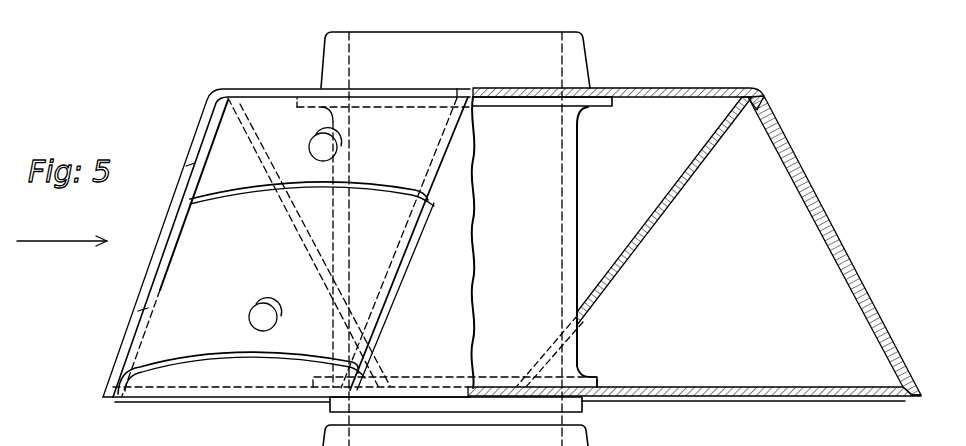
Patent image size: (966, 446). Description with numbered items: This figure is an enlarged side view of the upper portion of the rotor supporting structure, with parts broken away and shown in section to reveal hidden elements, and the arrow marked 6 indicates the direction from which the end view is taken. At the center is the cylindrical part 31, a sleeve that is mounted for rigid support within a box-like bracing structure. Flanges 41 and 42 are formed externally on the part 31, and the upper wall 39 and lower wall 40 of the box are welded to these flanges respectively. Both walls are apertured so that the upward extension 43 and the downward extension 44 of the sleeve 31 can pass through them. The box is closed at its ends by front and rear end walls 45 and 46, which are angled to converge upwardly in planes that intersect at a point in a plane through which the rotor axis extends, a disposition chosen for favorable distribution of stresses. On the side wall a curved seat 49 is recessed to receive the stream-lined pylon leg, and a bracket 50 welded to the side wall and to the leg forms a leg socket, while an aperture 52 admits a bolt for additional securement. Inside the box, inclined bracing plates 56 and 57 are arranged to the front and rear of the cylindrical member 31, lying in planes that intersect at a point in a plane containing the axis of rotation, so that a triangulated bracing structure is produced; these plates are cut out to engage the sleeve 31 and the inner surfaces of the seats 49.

The section line 6-6 direction arrow 6 is at (62, 234).
The cylindrical part 31 is at (529, 242).
The upper wall 39 is at (650, 88).
The lower wall 40 is at (763, 393).
The flange 41 is at (597, 103).
The flange 42 is at (595, 380).
The upward extension 43 is at (333, 53).
The downward extension 44 is at (333, 410).
The end wall 45 is at (147, 286).
The end wall 46 is at (845, 256).
The seat 49 is at (329, 243).
The bracket 50 is at (241, 353).
The aperture 52 is at (277, 312).
The inclined bracing plate 56 is at (330, 262).
The inclined bracing plate 57 is at (593, 283).